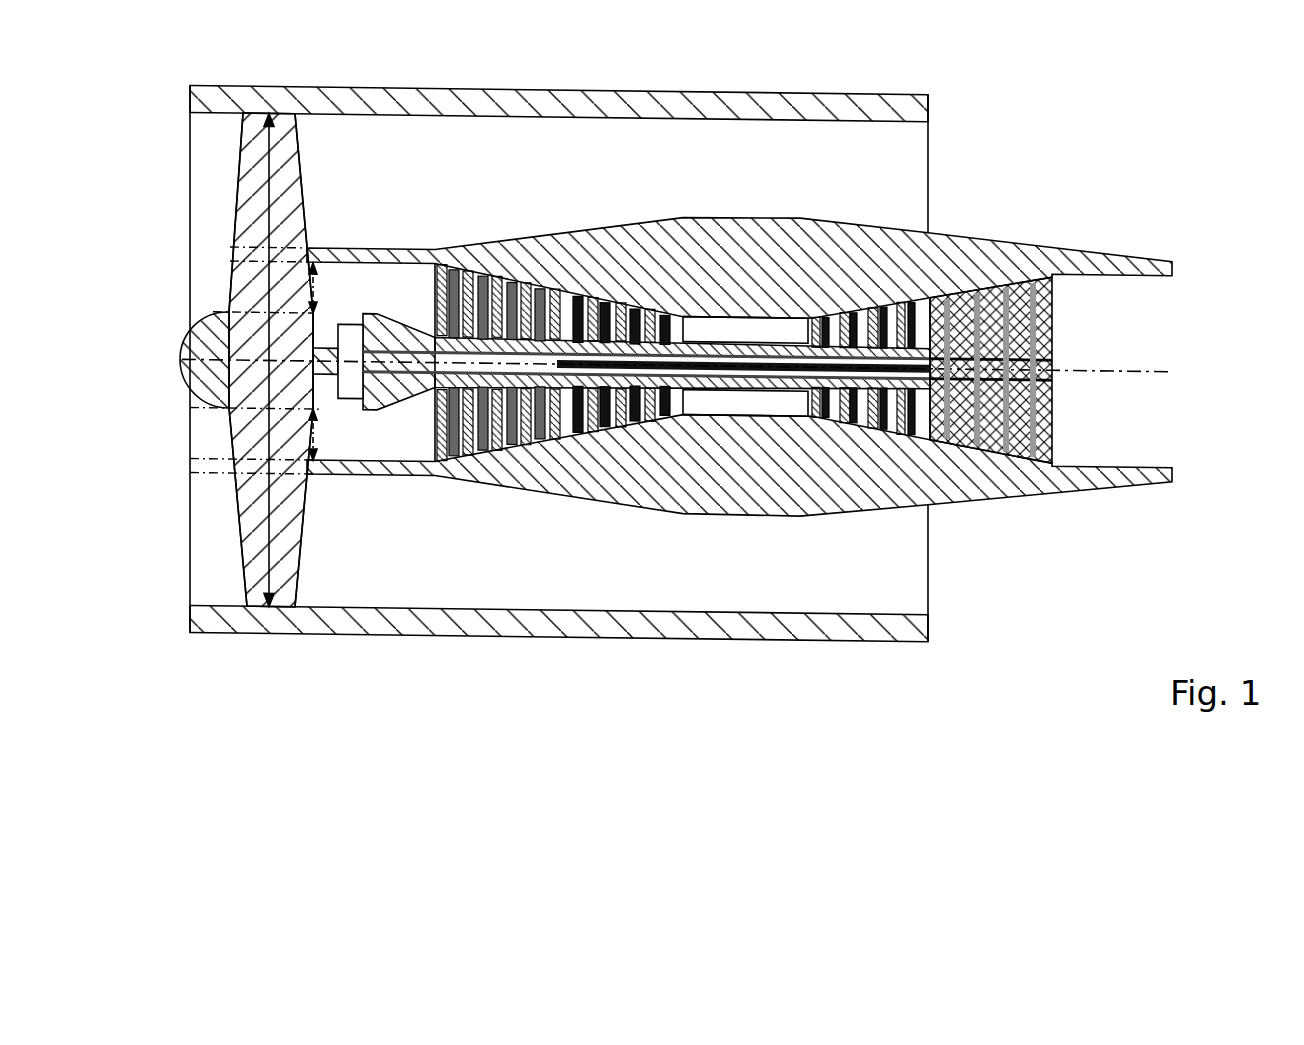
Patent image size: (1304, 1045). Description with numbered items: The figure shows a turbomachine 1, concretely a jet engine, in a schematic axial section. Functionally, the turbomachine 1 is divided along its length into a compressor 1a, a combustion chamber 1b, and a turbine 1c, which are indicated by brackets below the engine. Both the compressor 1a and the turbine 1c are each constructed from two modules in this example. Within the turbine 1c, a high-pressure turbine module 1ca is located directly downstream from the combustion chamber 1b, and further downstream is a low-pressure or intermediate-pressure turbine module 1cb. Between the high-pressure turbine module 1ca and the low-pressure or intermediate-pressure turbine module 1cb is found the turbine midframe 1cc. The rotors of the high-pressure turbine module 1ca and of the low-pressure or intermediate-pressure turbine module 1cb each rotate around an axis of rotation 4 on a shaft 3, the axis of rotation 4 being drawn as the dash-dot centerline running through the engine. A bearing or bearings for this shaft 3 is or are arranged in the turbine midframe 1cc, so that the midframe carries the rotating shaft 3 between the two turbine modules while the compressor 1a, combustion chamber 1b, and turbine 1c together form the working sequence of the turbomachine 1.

The turbomachine 1 is at (719, 435).
The compressor 1a is at (423, 643).
The combustion chamber 1b is at (673, 643).
The turbine 1c is at (990, 470).
The high-pressure turbine module 1ca is at (900, 742).
The turbine midframe 1cc is at (945, 742).
The low-pressure or intermediate-pressure turbine module 1cb is at (1055, 470).
The shaft 3 is at (932, 358).
The axis of rotation 4 is at (1125, 367).